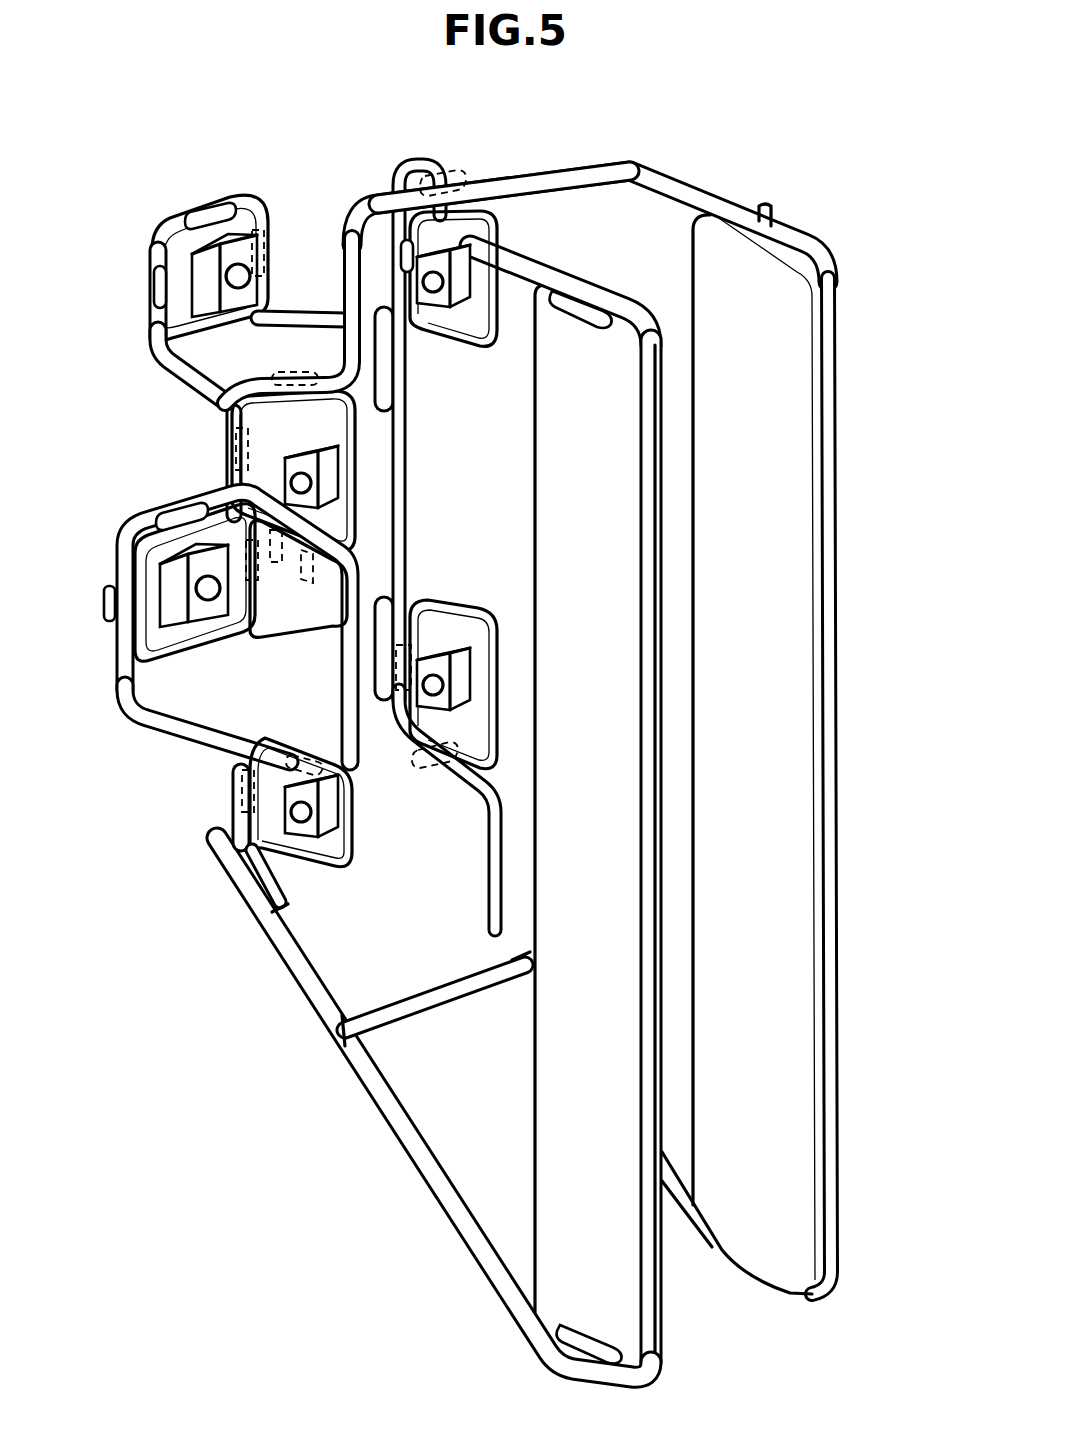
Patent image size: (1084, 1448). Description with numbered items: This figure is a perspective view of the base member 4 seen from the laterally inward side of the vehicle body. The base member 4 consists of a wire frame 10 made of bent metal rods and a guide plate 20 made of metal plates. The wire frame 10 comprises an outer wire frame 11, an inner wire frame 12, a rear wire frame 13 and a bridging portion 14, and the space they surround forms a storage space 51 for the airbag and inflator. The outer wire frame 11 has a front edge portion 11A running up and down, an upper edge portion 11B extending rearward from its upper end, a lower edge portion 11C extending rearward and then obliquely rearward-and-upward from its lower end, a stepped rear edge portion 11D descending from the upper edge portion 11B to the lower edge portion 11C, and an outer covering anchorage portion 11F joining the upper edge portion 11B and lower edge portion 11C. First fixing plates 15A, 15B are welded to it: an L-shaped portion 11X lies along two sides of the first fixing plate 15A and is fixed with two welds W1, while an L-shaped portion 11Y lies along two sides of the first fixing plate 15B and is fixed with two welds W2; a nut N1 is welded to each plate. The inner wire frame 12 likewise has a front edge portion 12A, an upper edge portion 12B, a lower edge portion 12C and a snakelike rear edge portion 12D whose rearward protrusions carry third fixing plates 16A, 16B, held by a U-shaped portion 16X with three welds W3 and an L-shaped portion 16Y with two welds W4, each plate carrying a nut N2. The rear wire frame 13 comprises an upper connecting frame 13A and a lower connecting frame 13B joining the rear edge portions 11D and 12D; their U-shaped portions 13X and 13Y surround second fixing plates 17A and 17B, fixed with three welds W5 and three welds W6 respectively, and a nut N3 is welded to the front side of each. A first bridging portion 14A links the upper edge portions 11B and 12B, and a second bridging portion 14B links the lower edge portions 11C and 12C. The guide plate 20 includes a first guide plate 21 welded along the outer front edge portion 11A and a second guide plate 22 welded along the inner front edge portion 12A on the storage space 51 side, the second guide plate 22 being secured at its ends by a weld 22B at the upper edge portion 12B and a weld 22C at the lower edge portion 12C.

The base member 4 is at (178, 150).
The wire frame 10 is at (324, 176).
The outer wire frame 11 is at (626, 702).
The front edge portion 11A is at (824, 705).
The upper edge portion 11B is at (722, 205).
The lower edge portion 11C is at (688, 1205).
The rear edge portion 11D is at (405, 452).
The outer covering anchorage portion 11F is at (772, 203).
The L-shaped portion 11X is at (394, 159).
The L-shaped portion 11Y is at (395, 755).
The inner wire frame 12 is at (516, 795).
The front edge portion 12A is at (657, 790).
The upper edge portion 12B is at (573, 270).
The lower edge portion 12C is at (420, 1180).
The rear edge portion 12D is at (376, 372).
The rear wire frame 13 is at (206, 510).
The upper connecting frame 13A is at (152, 308).
The lower connecting frame 13B is at (122, 650).
The U-shaped portion 13X is at (168, 247).
The U-shaped portion 13Y is at (204, 606).
The bridging portion 14 is at (486, 580).
The first bridging portion 14A is at (503, 200).
The second bridging portion 14B is at (410, 1015).
The first fixing plate 15A is at (475, 340).
The first fixing plate 15B is at (445, 635).
The third fixing plate 16A is at (222, 403).
The third fixing plate 16B is at (262, 808).
The U-shaped portion 16X is at (228, 380).
The L-shaped portion 16Y is at (254, 730).
The second fixing plate 17A is at (180, 265).
The second fixing plate 17B is at (152, 575).
The guide plate 20 is at (743, 789).
The first guide plate 21 is at (800, 515).
The second guide plate 22 is at (615, 565).
The weld 22B is at (590, 305).
The weld 22C is at (586, 1335).
The storage space 51 is at (757, 384).
The nut N1 is at (445, 300).
The nut N2 is at (325, 488).
The nut N3 is at (225, 250).
The weld W1 is at (436, 176).
The weld W2 is at (395, 670).
The weld W3 is at (280, 372).
The weld W4 is at (310, 752).
The weld W5 is at (205, 215).
The weld W6 is at (188, 538).